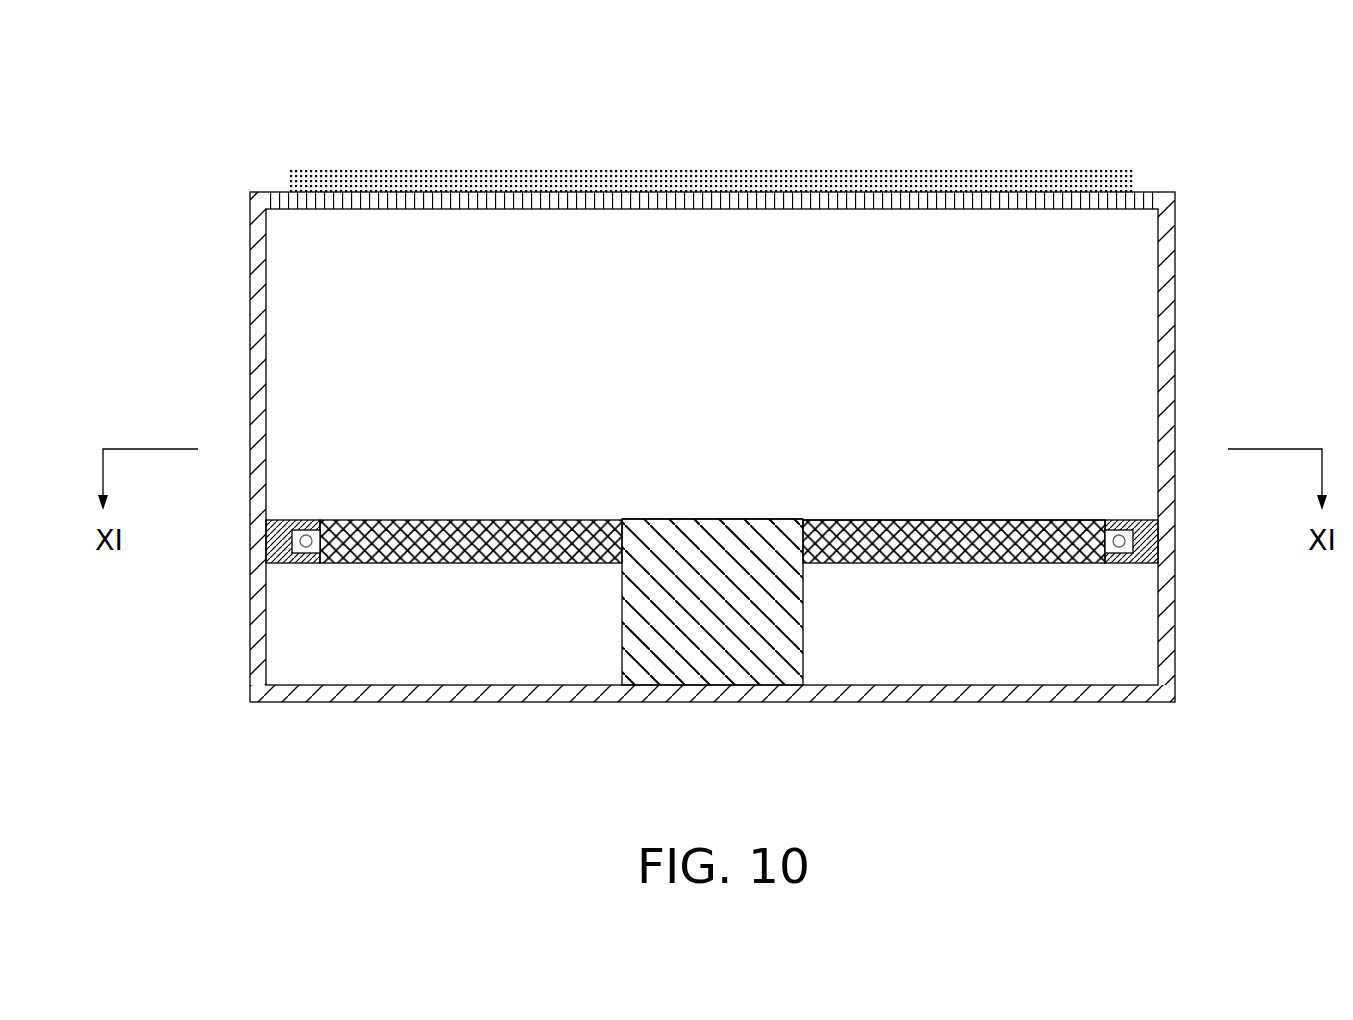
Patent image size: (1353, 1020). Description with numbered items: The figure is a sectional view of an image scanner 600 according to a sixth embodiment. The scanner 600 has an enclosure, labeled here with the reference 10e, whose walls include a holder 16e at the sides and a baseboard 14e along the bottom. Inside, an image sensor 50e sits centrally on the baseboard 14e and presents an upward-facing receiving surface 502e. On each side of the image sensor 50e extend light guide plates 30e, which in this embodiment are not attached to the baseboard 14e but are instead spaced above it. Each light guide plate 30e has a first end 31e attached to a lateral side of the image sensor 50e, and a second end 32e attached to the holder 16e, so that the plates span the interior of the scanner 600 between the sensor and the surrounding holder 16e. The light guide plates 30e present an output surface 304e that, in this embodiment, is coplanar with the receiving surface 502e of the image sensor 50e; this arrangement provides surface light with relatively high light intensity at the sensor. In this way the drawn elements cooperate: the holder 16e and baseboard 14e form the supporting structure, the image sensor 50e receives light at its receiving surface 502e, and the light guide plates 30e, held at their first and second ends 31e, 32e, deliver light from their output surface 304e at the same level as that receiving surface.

The image scanner 600 is at (625, 387).
The housing 10e is at (625, 463).
The holder 16e is at (260, 250).
The baseboard 14e is at (542, 693).
The receiving surface 502e is at (722, 502).
The image sensor 50e is at (959, 457).
The output surface 304e is at (1020, 504).
The first end 31e is at (807, 586).
The second end 32e is at (1097, 537).
The light guide plates 30e is at (780, 615).